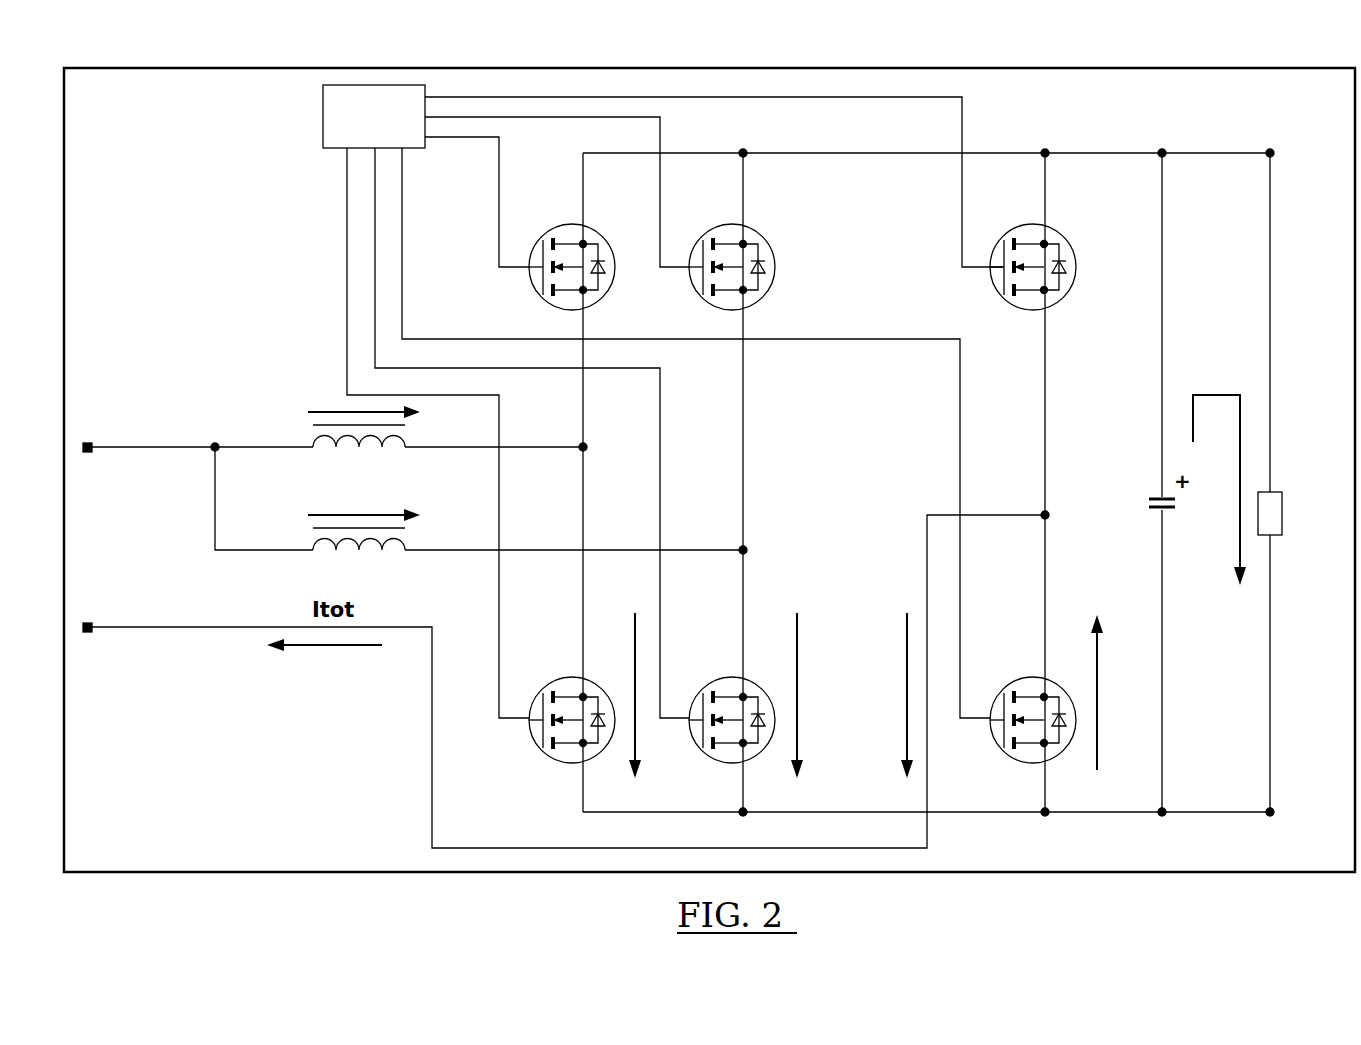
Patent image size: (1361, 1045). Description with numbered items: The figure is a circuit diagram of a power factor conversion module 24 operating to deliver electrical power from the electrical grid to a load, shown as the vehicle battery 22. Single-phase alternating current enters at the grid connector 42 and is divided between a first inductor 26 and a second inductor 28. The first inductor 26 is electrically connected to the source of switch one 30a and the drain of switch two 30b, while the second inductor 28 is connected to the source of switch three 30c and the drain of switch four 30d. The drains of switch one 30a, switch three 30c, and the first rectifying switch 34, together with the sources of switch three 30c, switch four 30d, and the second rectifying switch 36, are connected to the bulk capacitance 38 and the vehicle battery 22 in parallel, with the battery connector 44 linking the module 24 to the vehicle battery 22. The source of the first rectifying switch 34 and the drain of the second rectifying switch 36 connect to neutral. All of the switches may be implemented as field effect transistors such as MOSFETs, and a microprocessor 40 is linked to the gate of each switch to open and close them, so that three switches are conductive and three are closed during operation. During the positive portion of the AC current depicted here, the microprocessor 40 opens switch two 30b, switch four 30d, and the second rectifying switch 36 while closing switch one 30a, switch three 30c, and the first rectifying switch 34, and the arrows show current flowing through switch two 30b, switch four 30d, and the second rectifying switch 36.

The vehicle battery 22 is at (1280, 491).
The power factor conversion (PFC) module 24 is at (1092, 104).
The first inductor 26 is at (313, 440).
The second inductor 28 is at (313, 543).
The switch one 30a is at (557, 225).
The switch two 30b is at (557, 677).
The switch three 30c is at (717, 225).
The switch four 30d is at (717, 677).
The first rectifying switch 34 is at (1017, 225).
The second rectifying switch 36 is at (1019, 677).
The bulk capacitance 38 is at (1157, 510).
The microprocessor 40 is at (663, 401).
The grid connector 42 is at (88, 442).
The battery connector 44 is at (1272, 150).